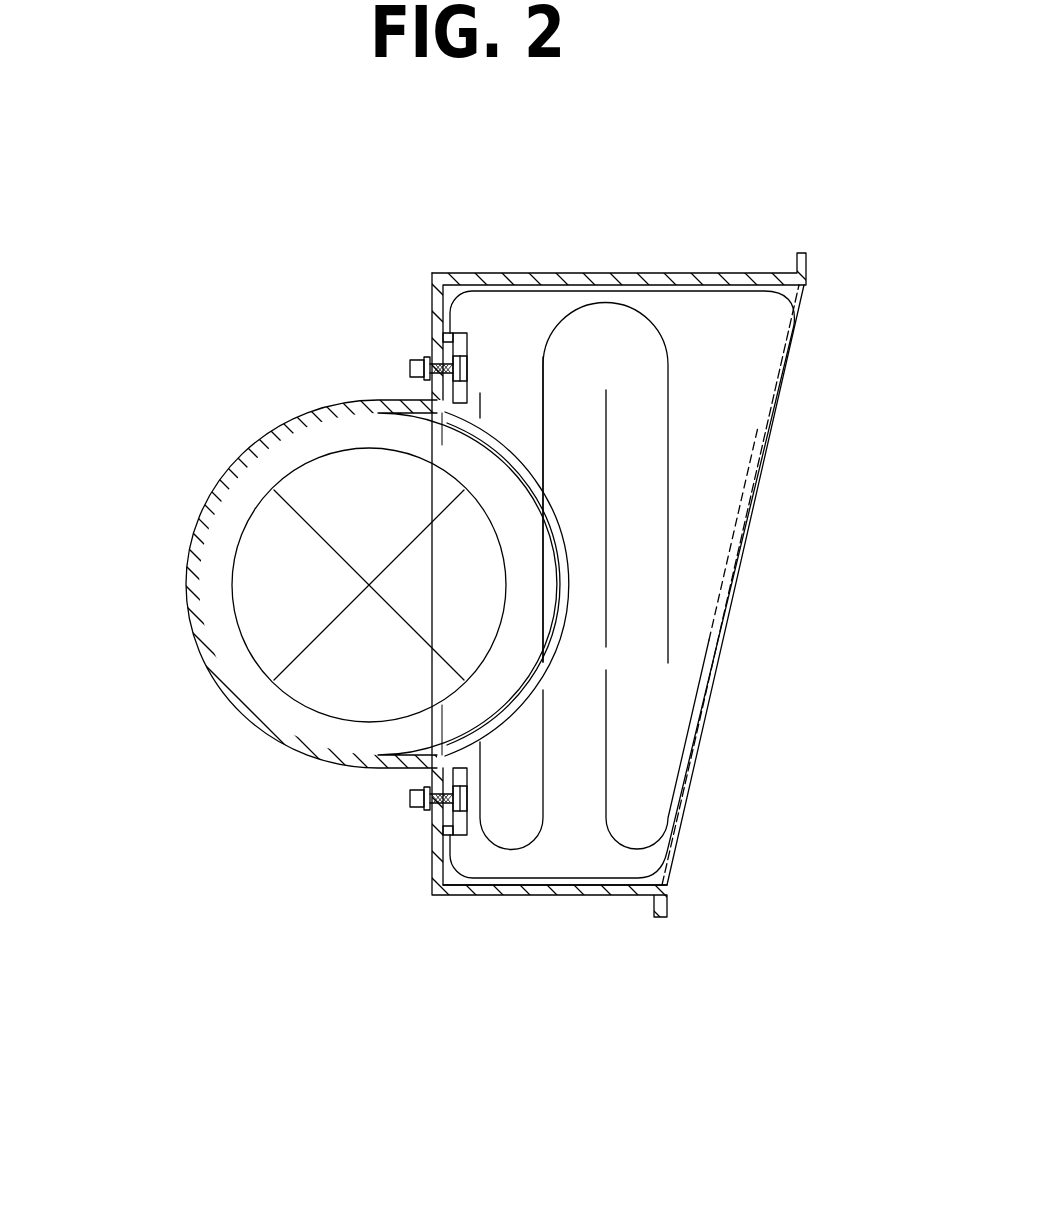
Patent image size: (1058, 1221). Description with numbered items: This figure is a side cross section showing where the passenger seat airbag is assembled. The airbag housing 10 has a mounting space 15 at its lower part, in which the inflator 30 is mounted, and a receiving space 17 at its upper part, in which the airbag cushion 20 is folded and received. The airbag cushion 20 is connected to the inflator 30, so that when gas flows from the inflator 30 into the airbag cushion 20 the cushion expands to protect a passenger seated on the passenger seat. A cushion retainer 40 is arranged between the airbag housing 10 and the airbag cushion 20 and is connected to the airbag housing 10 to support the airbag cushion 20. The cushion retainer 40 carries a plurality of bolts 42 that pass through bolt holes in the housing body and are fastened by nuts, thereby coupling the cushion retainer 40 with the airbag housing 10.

The airbag housing 10 is at (578, 933).
The mounting space 15 is at (207, 542).
The receiving space 17 is at (452, 878).
The airbag cushion 20 is at (655, 737).
The inflator 30 is at (266, 620).
The cushion retainer 40 is at (458, 336).
The bolts 42 is at (410, 362).